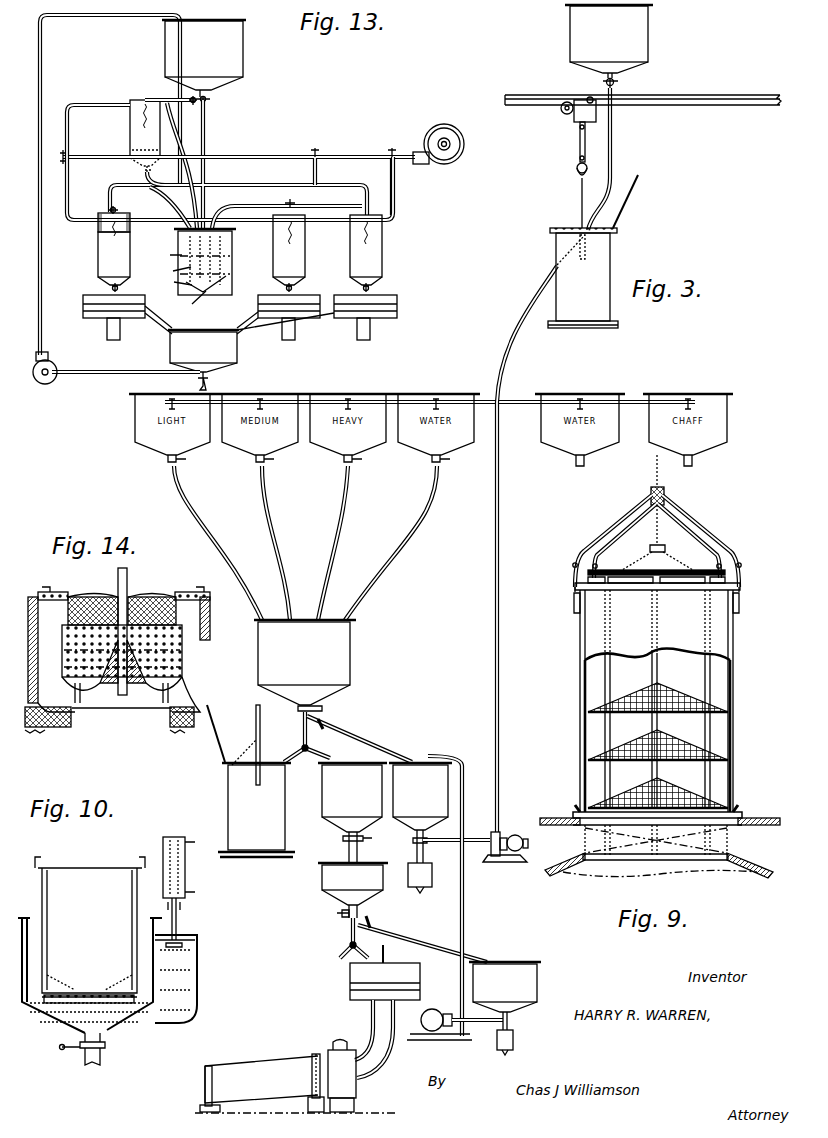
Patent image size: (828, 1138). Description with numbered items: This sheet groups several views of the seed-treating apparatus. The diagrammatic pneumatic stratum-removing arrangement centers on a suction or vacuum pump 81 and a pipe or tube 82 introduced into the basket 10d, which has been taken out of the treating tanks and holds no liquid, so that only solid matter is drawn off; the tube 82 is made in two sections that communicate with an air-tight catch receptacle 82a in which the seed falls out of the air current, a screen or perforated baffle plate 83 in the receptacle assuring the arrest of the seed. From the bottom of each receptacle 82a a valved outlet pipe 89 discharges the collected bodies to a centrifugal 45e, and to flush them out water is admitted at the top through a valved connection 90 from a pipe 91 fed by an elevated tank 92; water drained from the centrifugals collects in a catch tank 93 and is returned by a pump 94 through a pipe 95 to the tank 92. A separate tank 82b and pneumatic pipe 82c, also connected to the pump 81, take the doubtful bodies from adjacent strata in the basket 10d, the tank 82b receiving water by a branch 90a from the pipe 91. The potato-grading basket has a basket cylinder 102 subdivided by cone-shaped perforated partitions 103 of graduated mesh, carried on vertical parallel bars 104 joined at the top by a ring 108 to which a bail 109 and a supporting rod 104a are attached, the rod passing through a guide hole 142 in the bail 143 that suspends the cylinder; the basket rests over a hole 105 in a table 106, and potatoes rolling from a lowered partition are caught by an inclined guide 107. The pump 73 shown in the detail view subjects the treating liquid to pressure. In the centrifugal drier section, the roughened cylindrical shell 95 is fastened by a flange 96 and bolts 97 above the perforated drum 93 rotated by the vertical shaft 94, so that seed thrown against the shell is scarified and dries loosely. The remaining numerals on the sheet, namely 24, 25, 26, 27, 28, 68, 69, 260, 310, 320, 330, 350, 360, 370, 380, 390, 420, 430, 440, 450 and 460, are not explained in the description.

In FIG. 13, the elevated tank 92 is at (204, 61).
In FIG. 13, the pneumatic pipe 82c is at (92, 104).
In FIG. 13, the branch 90a is at (161, 99).
In FIG. 13, the screen or perforated baffle plate 83 is at (137, 108).
In FIG. 13, the pipe 91 is at (206, 117).
In FIG. 13, the separate tank 82b is at (133, 120).
In FIG. 13, the suction or vacuum pump 81 is at (438, 125).
In FIG. 13, the valved connection 90 is at (110, 209).
In FIG. 13, the valved outlet pipe 89 is at (163, 196).
In FIG. 13, the pipe or tube 82 is at (91, 224).
In FIG. 13, the basket 10d is at (234, 242).
In FIG. 13, the pipe / cylindrical shell 95 is at (41, 278).
In FIG. 14, the pipe / cylindrical shell 95 is at (112, 600).
In FIG. 13, the catch receptacle 82a is at (240, 250).
In FIG. 13, the centrifugal 45e is at (96, 320).
In FIG. 13, the catch tank / drum 93 is at (228, 350).
In FIG. 14, the catch tank / drum 93 is at (181, 637).
In FIG. 13, the pump / vertical shaft 94 is at (45, 376).
In FIG. 14, the pump / vertical shaft 94 is at (142, 600).
In FIG. 13, the valve 25 is at (180, 462).
In FIG. 13, the valve 26 is at (270, 462).
In FIG. 13, the valve 27 is at (358, 463).
In FIG. 13, the valve 28 is at (447, 464).
In FIG. 13, the water pipe 460 is at (494, 623).
In FIG. 13, the tank 260 is at (256, 657).
In FIG. 13, the valve 320 is at (332, 708).
In FIG. 13, the pipe 310 is at (303, 721).
In FIG. 13, the valve 69 is at (334, 745).
In FIG. 13, the pipe 330 is at (387, 746).
In FIG. 13, the cell 24 is at (288, 757).
In FIG. 13, the branch pipe 68 is at (307, 761).
In FIG. 13, the tank 360 is at (352, 812).
In FIG. 13, the tank 350 is at (439, 828).
In FIG. 13, the pump 450 is at (504, 833).
In FIG. 13, the tank 370 is at (353, 890).
In FIG. 13, the valve 380 is at (349, 925).
In FIG. 13, the pipe 390 is at (412, 941).
In FIG. 13, the pipe 420 is at (468, 922).
In FIG. 13, the centrifugal 430 is at (350, 996).
In FIG. 13, the rotary drier 440 is at (250, 1068).
In FIG. 10, the pump 73 is at (198, 995).
In FIG. 14, the bolts 97 is at (46, 597).
In FIG. 14, the flange 96 is at (80, 597).
In FIG. 9, the supporting rod 104a is at (664, 478).
In FIG. 9, the guide hole 142 is at (650, 493).
In FIG. 9, the bail 109 is at (695, 540).
In FIG. 9, the bail 143 is at (580, 546).
In FIG. 9, the ring 108 is at (612, 572).
In FIG. 9, the basket cylinder 102 is at (735, 632).
In FIG. 9, the vertical parallel bars or rods 104 is at (622, 658).
In FIG. 9, the perforated partitions 103 is at (731, 712).
In FIG. 9, the table or platform 106 is at (750, 817).
In FIG. 9, the hole 105 is at (732, 824).
In FIG. 9, the inclined guide 107 is at (757, 881).